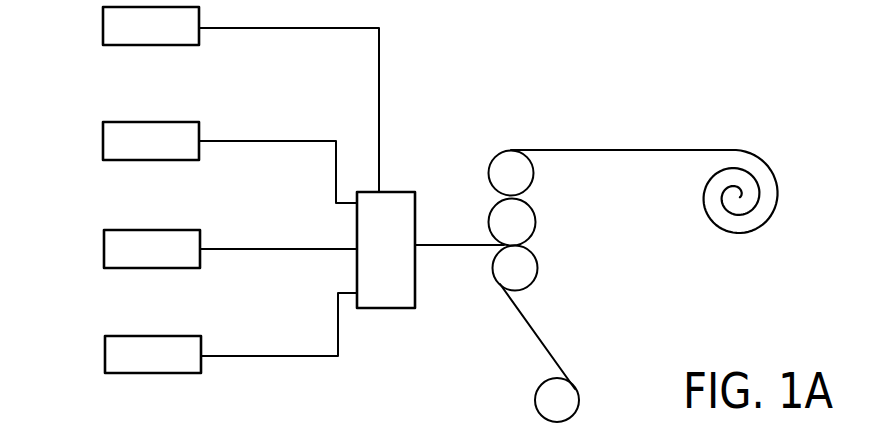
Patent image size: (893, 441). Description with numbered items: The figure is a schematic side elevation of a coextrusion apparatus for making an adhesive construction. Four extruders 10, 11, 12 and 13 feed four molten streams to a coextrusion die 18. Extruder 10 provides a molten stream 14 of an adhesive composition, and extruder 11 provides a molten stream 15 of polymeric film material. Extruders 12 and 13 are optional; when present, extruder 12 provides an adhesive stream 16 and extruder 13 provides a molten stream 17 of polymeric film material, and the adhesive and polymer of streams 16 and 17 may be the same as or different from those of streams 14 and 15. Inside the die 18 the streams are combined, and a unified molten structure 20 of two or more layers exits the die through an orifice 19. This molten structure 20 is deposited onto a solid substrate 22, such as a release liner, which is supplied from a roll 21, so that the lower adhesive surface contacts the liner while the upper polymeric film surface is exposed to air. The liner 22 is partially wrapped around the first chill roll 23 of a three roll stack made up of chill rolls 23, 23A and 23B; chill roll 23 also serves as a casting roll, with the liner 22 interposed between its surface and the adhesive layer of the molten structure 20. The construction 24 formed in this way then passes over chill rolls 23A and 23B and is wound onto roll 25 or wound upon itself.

The extruder 10 is at (105, 355).
The extruder 11 is at (104, 249).
The extruder 12 is at (103, 141).
The extruder 13 is at (103, 28).
The molten stream 14 is at (279, 325).
The molten stream 15 is at (278, 238).
The adhesive stream 16 is at (278, 159).
The molten stream 17 is at (289, 98).
The coextrusion die 18 is at (395, 218).
The orifice 19 is at (418, 244).
The unified molten structure 20 is at (445, 247).
The roll 21 is at (560, 408).
The solid substrate 22 is at (540, 338).
The chill roll 23 is at (528, 277).
The chill roll 23A is at (515, 223).
The chill roll 23B is at (517, 173).
The construction 24 is at (632, 150).
The roll 25 is at (745, 207).